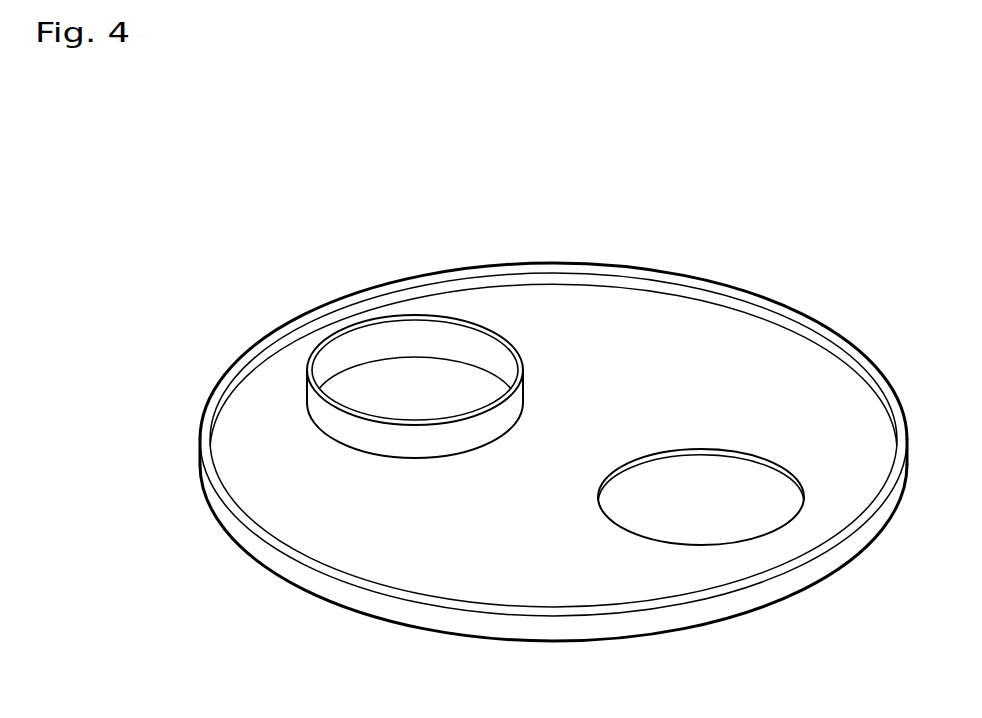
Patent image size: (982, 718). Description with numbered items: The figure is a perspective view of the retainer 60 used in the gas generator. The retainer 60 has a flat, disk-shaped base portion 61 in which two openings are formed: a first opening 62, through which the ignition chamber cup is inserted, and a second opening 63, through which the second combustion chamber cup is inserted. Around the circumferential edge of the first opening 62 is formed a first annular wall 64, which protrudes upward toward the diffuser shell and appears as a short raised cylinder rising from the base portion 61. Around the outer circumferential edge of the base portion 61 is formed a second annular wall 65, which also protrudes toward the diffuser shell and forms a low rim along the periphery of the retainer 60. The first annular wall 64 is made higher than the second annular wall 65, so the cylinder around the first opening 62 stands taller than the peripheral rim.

The retainer 60 is at (757, 280).
The base portion 61 is at (593, 323).
The first opening 62 is at (397, 382).
The second opening 63 is at (712, 477).
The first annular wall 64 is at (370, 433).
The second annular wall 65 is at (512, 632).